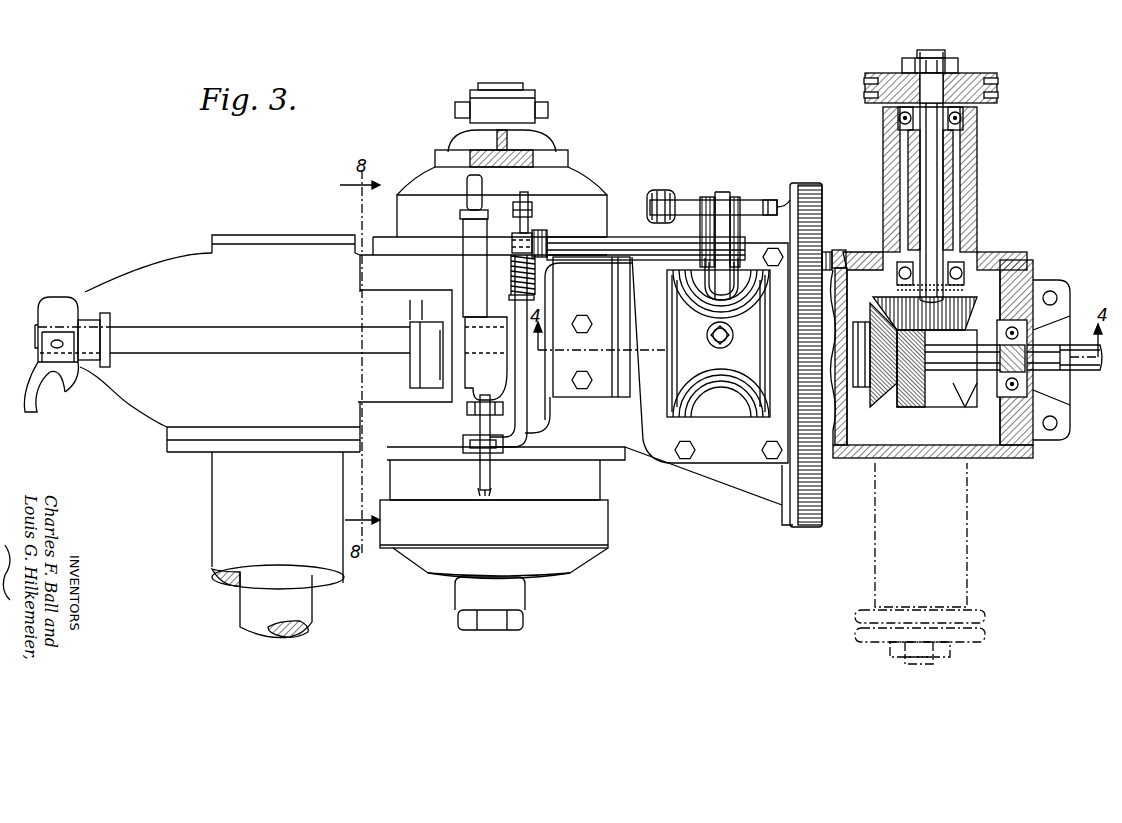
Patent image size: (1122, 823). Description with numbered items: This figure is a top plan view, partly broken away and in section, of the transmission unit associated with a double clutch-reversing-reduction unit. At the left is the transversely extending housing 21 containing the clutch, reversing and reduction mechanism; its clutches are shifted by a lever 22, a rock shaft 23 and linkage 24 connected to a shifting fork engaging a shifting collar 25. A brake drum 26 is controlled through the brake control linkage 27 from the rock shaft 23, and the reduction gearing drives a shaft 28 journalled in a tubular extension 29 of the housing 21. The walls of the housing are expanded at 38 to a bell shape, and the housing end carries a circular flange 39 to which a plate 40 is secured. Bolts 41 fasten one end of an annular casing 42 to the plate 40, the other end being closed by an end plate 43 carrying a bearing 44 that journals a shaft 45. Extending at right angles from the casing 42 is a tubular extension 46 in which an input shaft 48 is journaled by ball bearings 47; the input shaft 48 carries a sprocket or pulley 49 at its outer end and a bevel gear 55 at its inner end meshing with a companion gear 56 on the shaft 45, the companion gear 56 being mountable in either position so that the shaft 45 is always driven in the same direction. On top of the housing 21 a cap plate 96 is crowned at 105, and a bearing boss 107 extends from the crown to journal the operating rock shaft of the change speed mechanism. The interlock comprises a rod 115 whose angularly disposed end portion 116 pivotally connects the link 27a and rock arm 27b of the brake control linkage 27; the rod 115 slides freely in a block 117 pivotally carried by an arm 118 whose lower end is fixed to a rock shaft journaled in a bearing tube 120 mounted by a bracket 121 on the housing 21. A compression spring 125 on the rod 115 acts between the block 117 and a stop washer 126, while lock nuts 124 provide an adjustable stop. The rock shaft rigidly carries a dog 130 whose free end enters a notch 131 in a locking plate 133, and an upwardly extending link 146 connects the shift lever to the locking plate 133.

The housing 21 is at (220, 343).
The lever 22 is at (60, 405).
The rock shaft 23 is at (248, 350).
The linkage 24 is at (466, 202).
The shifting collar 25 is at (527, 103).
The brake drum 26 is at (600, 536).
The brake control linkage 27 is at (480, 378).
The link 27a is at (472, 421).
The rock arm 27b is at (477, 477).
The shaft 28 is at (240, 607).
The tubular extension 29 is at (212, 495).
The expanded walls 38 is at (701, 487).
The circular flange 39 is at (786, 488).
The plate 40 is at (812, 492).
The bolts 41 is at (830, 245).
The annular casing 42 is at (1027, 257).
The end plate 43 is at (1038, 276).
The bearing 44 is at (1003, 397).
The shaft 45 is at (1078, 368).
The tubular extension 46 is at (972, 168).
The ball bearings 47 is at (893, 119).
The input shaft 48 is at (934, 206).
The sprocket or pulley 49 is at (977, 73).
The bevel gear 55 is at (966, 306).
The companion gear 56 is at (887, 403).
The cap plate 96 is at (647, 416).
The crown 105 is at (723, 392).
The bearing boss 107 is at (740, 263).
The rod 115 is at (527, 401).
The angularly disposed end portion 116 is at (503, 447).
The block 117 is at (516, 242).
The arm 118 is at (547, 234).
The bearing tube 120 is at (618, 237).
The bracket 121 is at (591, 327).
The nut 124 is at (539, 216).
The compression spring 125 is at (534, 280).
The stop washer 126 is at (534, 298).
The dog 130 is at (720, 200).
The notch 131 is at (770, 200).
The locking plate 133 is at (687, 200).
The link 146 is at (657, 190).